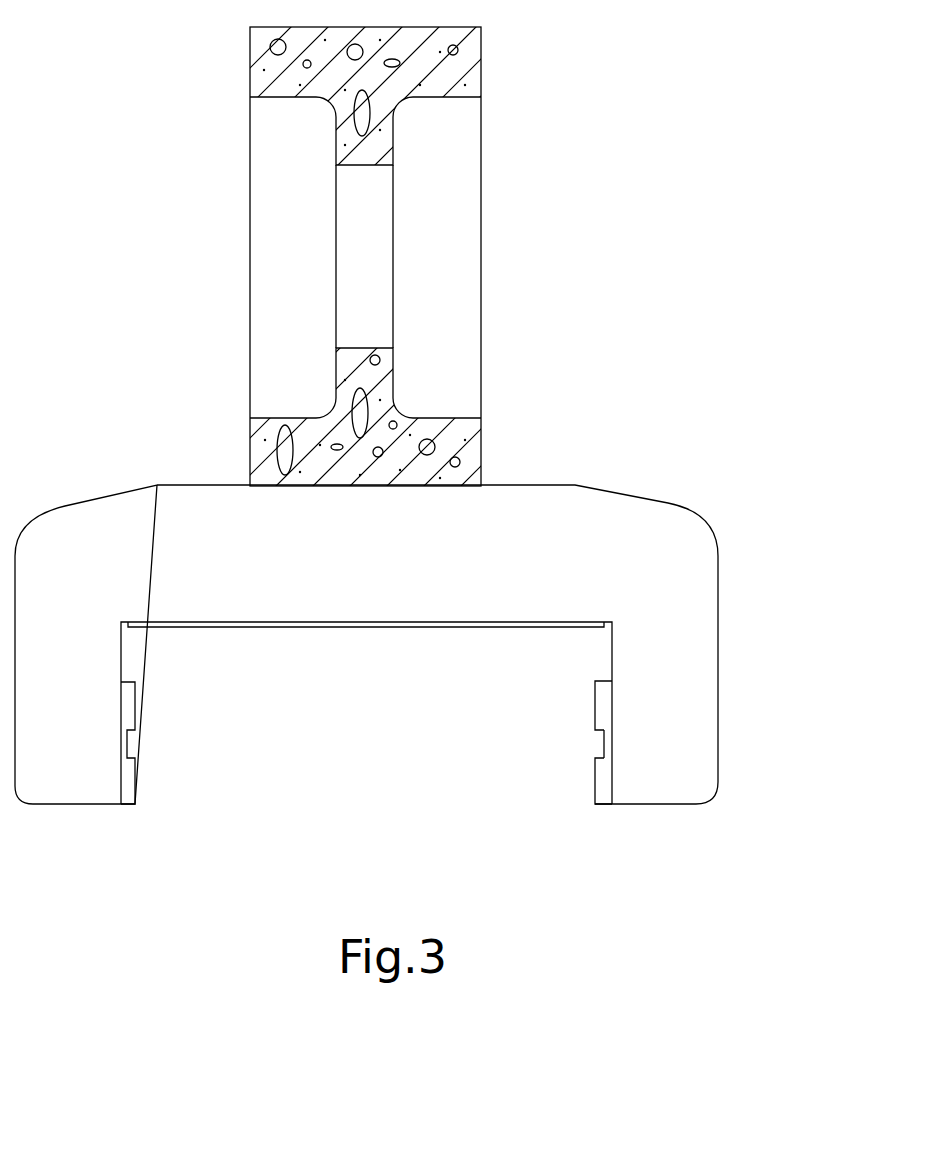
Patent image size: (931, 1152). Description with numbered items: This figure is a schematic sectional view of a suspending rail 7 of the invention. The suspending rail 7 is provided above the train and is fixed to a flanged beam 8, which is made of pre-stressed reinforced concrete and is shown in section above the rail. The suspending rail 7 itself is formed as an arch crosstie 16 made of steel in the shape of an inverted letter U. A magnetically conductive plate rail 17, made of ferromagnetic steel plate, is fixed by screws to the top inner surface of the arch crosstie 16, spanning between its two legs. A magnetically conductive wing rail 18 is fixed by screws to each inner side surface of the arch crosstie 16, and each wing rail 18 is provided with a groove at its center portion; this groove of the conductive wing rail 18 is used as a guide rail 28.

The suspending rail 7 is at (723, 562).
The flanged beam 8 is at (408, 252).
The arch crosstie 16 is at (692, 685).
The magnetically conductive plate rail 17 is at (360, 623).
The magnetically conductive wing rail 18 is at (603, 783).
The guide rail 28 is at (609, 740).